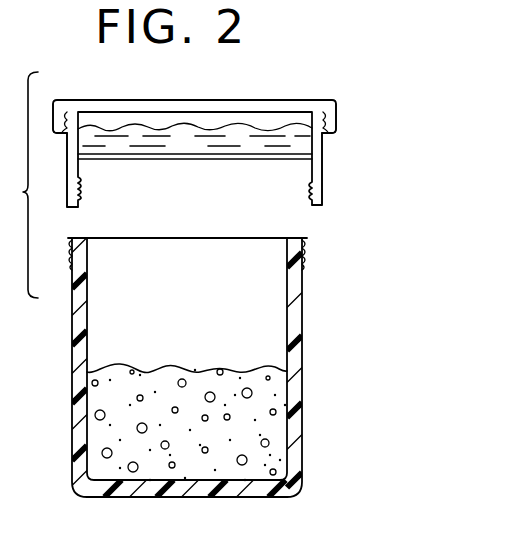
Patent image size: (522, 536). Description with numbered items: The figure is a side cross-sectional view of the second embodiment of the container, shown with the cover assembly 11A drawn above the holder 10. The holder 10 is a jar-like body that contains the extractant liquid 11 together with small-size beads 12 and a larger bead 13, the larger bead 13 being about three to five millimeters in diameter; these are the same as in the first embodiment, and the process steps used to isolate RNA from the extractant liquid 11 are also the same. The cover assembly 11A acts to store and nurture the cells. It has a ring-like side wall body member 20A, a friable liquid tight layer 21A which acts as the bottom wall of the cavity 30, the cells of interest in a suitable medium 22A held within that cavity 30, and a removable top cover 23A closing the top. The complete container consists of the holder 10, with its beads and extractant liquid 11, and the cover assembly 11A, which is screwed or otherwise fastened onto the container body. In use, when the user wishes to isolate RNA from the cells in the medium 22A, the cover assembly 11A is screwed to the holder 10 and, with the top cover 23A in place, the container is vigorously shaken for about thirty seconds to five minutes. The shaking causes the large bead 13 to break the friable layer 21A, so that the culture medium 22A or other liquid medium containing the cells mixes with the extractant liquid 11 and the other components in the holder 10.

The holder 10 is at (295, 418).
The extractant liquid 11 is at (277, 442).
The small-size beads 12 is at (260, 461).
The larger bead 13 is at (253, 394).
The cover assembly 11A is at (337, 140).
The ring-like side wall body member 20A is at (317, 165).
The friable liquid tight layer 21A is at (277, 159).
The medium 22A is at (128, 100).
The removable top cover 23A is at (280, 101).
The cavity 30 is at (205, 120).